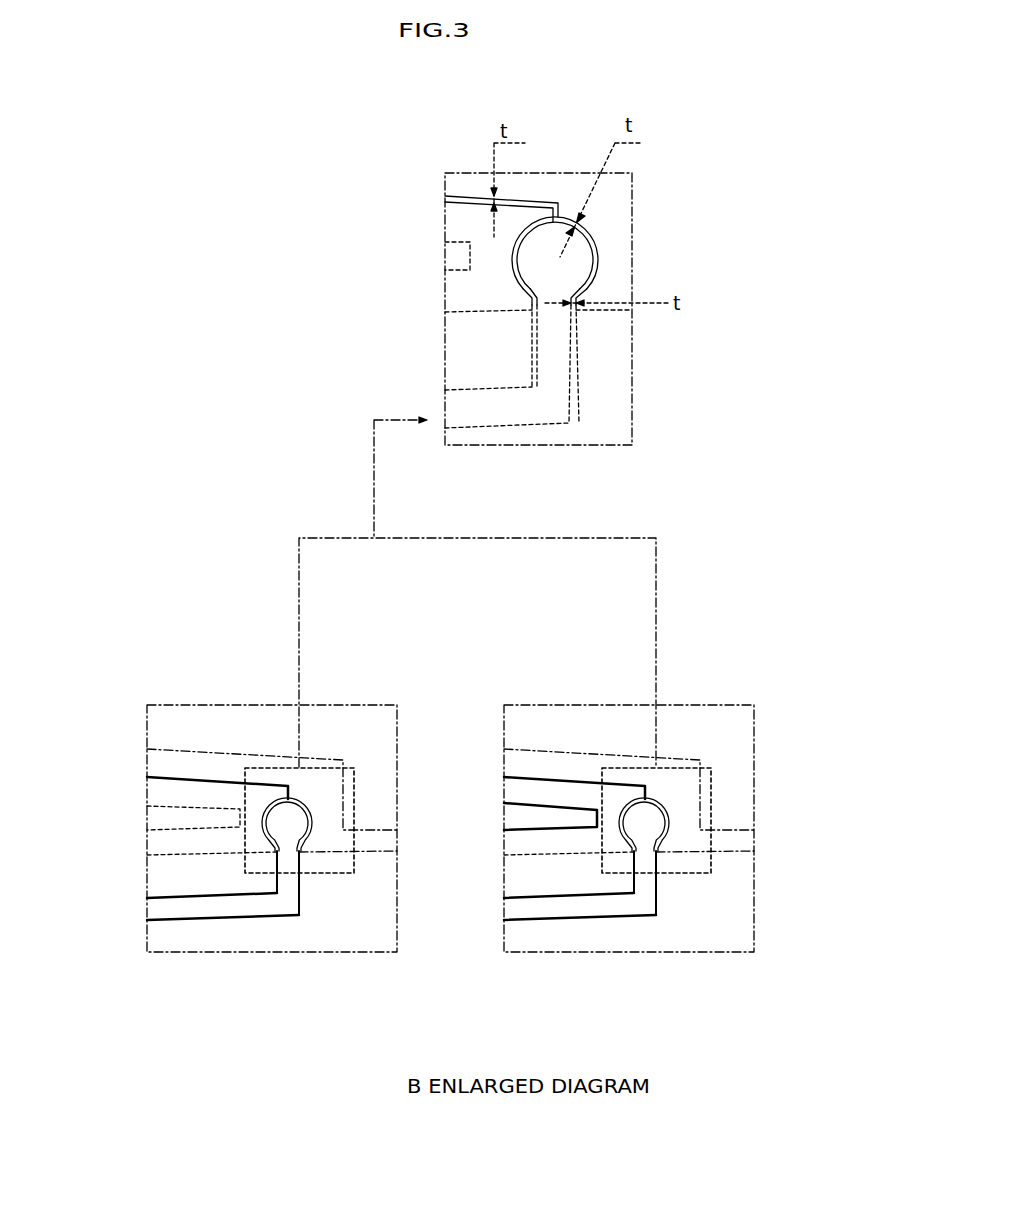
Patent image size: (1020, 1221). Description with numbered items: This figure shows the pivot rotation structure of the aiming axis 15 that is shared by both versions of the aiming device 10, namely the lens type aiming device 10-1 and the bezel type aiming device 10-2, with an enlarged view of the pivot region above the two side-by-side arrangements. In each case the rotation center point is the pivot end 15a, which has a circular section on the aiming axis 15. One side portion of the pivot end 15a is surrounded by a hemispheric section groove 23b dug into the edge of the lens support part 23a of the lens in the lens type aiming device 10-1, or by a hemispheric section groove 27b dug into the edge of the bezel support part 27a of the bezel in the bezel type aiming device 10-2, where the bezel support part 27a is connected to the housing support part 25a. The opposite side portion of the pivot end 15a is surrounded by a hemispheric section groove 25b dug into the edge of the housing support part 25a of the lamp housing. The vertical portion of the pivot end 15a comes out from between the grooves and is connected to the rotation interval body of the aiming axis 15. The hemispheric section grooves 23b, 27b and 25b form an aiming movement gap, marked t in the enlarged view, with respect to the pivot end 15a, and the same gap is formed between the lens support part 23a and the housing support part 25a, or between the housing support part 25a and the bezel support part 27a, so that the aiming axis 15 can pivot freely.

The aiming device 10 is at (520, 633).
The lens type aiming device 10-1 is at (322, 767).
The bezel type aiming device 10-2 is at (620, 767).
The aiming axis 15 is at (497, 398).
The pivot end 15a is at (578, 272).
The lens support part 23a is at (460, 220).
The hemispheric section groove 23b is at (510, 273).
The housing support part 25a is at (463, 185).
The hemispheric section groove 25b is at (588, 228).
The bezel support part 27a is at (557, 843).
The hemispheric section groove 27b is at (629, 789).